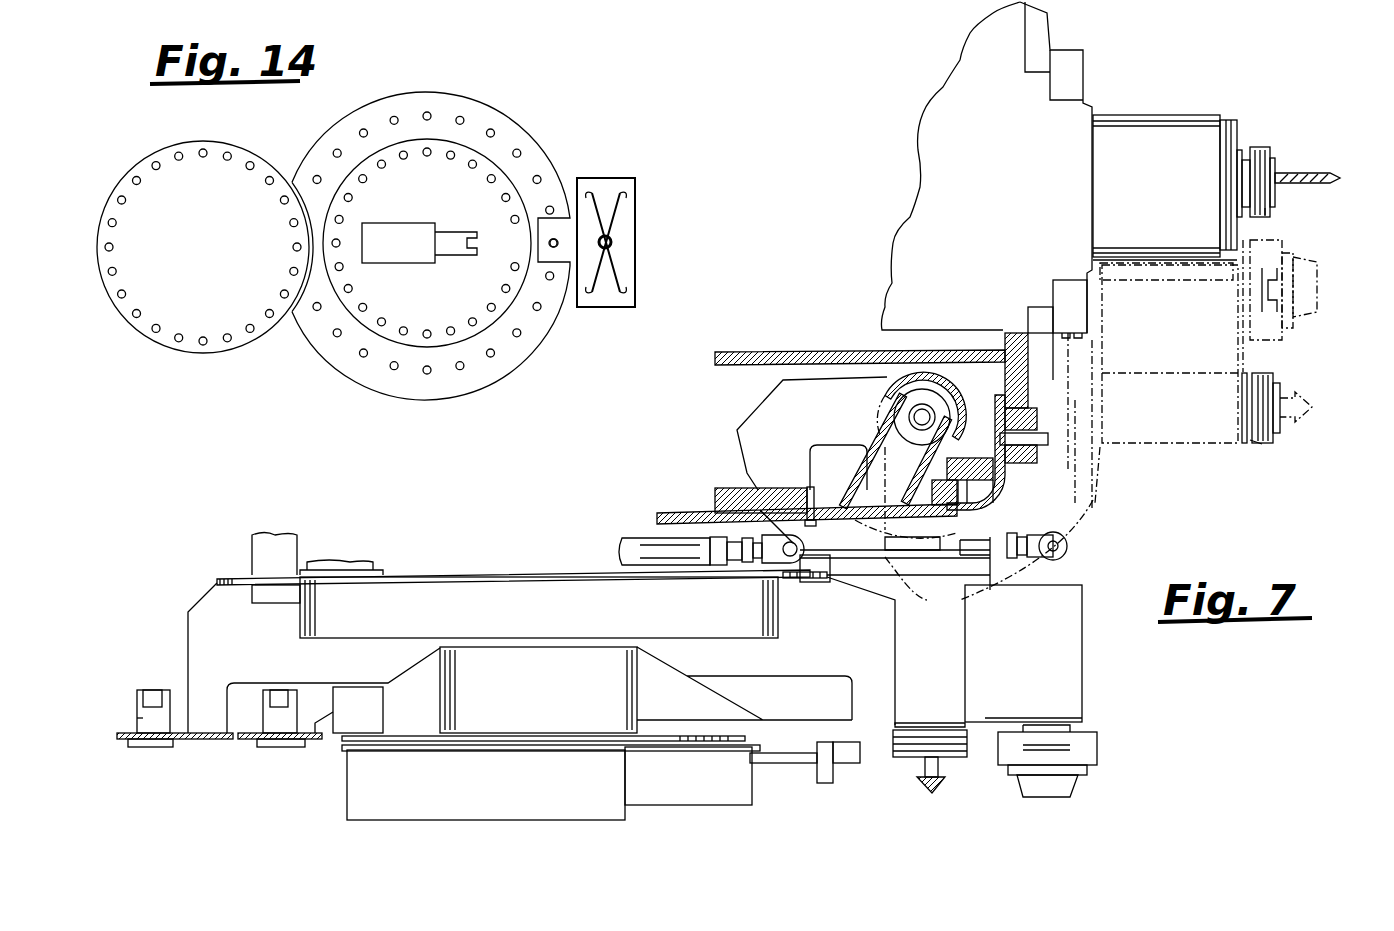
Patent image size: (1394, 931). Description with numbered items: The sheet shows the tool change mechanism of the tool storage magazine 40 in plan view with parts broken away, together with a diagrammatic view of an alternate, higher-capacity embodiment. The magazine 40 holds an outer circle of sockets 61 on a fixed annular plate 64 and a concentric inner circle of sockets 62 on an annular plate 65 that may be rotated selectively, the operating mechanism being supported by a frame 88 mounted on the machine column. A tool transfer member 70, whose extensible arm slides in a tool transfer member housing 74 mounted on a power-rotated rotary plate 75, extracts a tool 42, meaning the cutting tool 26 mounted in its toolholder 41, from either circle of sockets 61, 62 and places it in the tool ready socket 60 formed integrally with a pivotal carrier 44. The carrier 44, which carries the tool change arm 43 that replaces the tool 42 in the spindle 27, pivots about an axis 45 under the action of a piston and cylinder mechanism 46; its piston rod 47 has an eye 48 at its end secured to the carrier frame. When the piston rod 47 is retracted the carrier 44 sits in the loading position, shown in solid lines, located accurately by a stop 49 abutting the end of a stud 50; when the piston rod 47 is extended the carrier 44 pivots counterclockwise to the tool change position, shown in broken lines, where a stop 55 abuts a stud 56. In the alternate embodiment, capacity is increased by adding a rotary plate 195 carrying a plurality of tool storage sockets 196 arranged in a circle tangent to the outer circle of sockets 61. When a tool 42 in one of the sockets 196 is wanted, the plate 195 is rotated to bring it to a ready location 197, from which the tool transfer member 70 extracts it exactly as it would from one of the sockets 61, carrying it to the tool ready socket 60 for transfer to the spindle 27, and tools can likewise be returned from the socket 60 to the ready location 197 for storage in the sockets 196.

In FIG. 7, the cutting tool 26 is at (1305, 178).
In FIG. 7, the spindle 27 is at (1172, 127).
In FIG. 14, the tool storage magazine 40 is at (516, 98).
In FIG. 7, the tool storage magazine 40 is at (172, 652).
In FIG. 7, the toolholder 41 is at (1265, 212).
In FIG. 7, the tool 42 is at (1276, 133).
In FIG. 14, the tool change arm 43 is at (611, 196).
In FIG. 7, the tool change arm 43 is at (1328, 273).
In FIG. 14, the carrier 44 is at (637, 234).
In FIG. 7, the carrier 44 is at (1258, 354).
In FIG. 7, the axis 45 is at (912, 417).
In FIG. 7, the piston and cylinder mechanism 46 is at (630, 545).
In FIG. 7, the piston rod 47 is at (1040, 447).
In FIG. 7, the eye 48 is at (800, 549).
In FIG. 7, the stop 49 is at (822, 580).
In FIG. 7, the stud 50 is at (805, 585).
In FIG. 7, the stop 55 is at (1085, 363).
In FIG. 7, the stud 56 is at (1078, 330).
In FIG. 14, the tool ready socket 60 is at (556, 247).
In FIG. 7, the tool ready socket 60 is at (1190, 427).
In FIG. 14, the outer circle of sockets 61 is at (540, 178).
In FIG. 7, the outer circle of sockets 61 is at (140, 718).
In FIG. 14, the inner circle of sockets 62 is at (451, 336).
In FIG. 7, the inner circle of sockets 62 is at (268, 713).
In FIG. 7, the annular plate 64 is at (193, 740).
In FIG. 7, the annular plate 65 is at (318, 740).
In FIG. 14, the tool transfer member 70 is at (414, 276).
In FIG. 7, the tool transfer member 70 is at (696, 820).
In FIG. 7, the tool transfer member housing 74 is at (493, 808).
In FIG. 7, the rotary plate 75 is at (652, 735).
In FIG. 7, the frame 88 is at (210, 605).
In FIG. 14, the rotary plate 195 is at (147, 287).
In FIG. 14, the tool storage sockets 196 is at (154, 166).
In FIG. 14, the ready location 197 is at (294, 246).